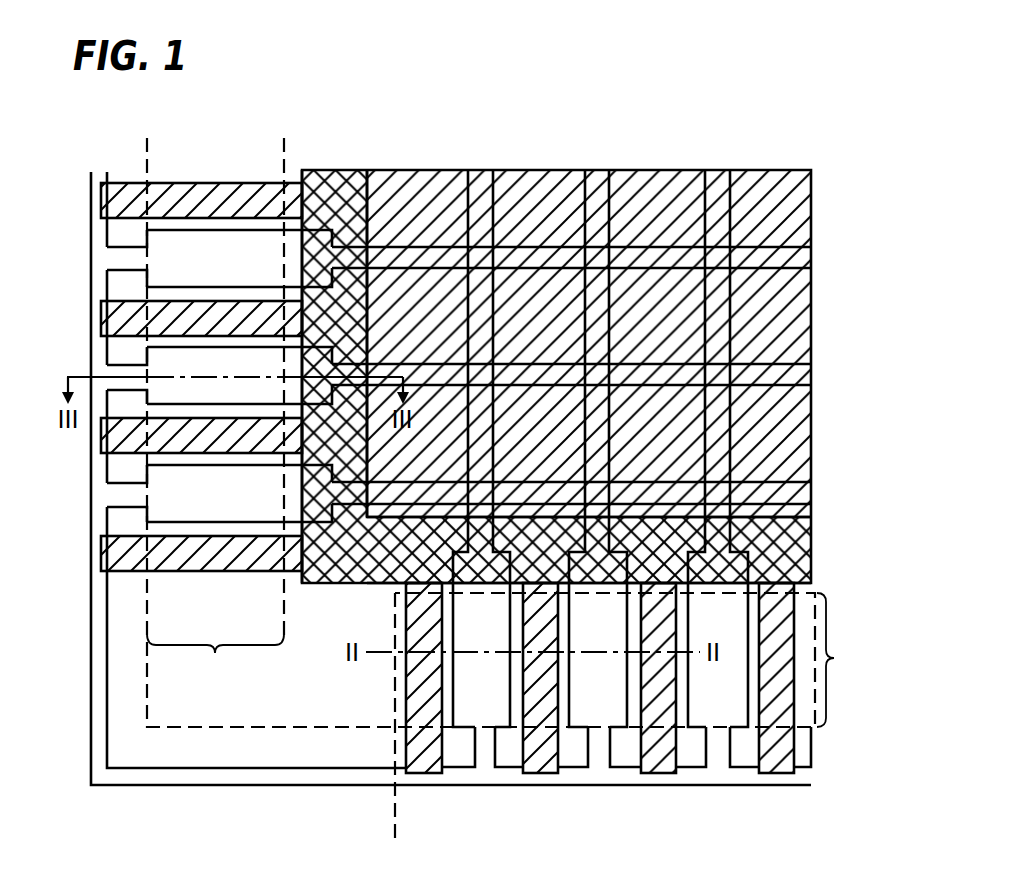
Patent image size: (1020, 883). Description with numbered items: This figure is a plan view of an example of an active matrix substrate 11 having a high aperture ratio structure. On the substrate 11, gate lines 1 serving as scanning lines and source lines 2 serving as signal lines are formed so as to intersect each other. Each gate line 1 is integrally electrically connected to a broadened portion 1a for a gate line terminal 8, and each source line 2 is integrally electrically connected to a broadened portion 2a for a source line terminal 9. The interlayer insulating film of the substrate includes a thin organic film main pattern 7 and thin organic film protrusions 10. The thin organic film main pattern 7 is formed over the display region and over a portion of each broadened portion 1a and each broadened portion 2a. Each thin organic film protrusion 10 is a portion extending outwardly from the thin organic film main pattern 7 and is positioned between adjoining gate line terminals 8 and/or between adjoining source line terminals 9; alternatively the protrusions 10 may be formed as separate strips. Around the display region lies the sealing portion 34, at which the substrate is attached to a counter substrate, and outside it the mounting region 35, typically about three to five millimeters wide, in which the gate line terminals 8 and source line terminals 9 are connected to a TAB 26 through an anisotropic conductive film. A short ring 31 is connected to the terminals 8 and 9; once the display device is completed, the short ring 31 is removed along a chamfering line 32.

The gate line 1 is at (632, 245).
The broadened portion for gate line terminal 1a is at (168, 258).
The source line 2 is at (732, 210).
The broadened portion for source line terminal 2a is at (702, 713).
The thin organic film main pattern 7 is at (393, 187).
The gate line terminal 8 is at (205, 242).
The source line terminal 9 is at (727, 708).
The thin organic film protrusion 10 is at (122, 185).
The substrate 11 is at (205, 710).
The TAB 26 is at (382, 701).
The short ring 31 is at (102, 500).
The chamfering line 32 is at (148, 704).
The sealing portion 34 is at (800, 555).
The mounting region 35 is at (507, 660).